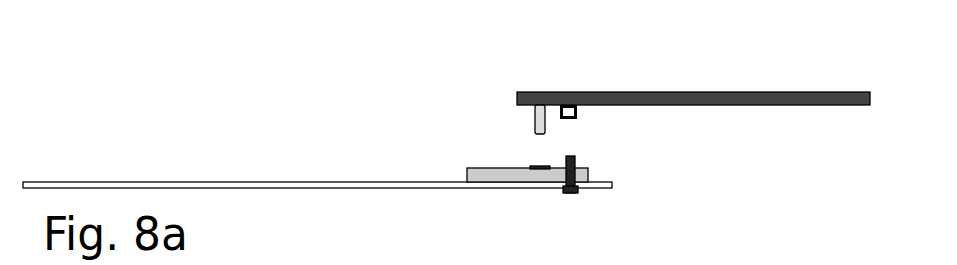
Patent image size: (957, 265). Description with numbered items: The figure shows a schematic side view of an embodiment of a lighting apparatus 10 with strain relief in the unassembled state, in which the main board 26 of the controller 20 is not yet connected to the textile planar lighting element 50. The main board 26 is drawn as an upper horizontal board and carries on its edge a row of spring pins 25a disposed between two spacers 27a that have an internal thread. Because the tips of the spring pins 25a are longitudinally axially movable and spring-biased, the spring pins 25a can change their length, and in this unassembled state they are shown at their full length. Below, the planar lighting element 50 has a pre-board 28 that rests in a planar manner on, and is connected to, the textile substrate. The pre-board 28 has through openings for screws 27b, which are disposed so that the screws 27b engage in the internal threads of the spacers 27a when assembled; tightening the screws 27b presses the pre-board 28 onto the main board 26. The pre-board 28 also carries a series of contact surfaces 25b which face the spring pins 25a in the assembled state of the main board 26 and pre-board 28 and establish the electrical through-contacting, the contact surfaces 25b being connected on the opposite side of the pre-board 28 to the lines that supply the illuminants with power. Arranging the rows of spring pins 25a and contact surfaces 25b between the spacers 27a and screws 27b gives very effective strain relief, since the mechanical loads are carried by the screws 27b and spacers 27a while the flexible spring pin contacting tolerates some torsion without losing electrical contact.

The lighting apparatus 10 is at (283, 80).
The controller 20 is at (812, 92).
The main board 26 is at (748, 92).
The textile planar lighting element 50 is at (70, 181).
The pre-board 28 is at (501, 189).
The spring pins 25a is at (533, 128).
The contact surfaces 25b is at (540, 166).
The spacers 27a is at (577, 118).
The screws 27b is at (575, 157).